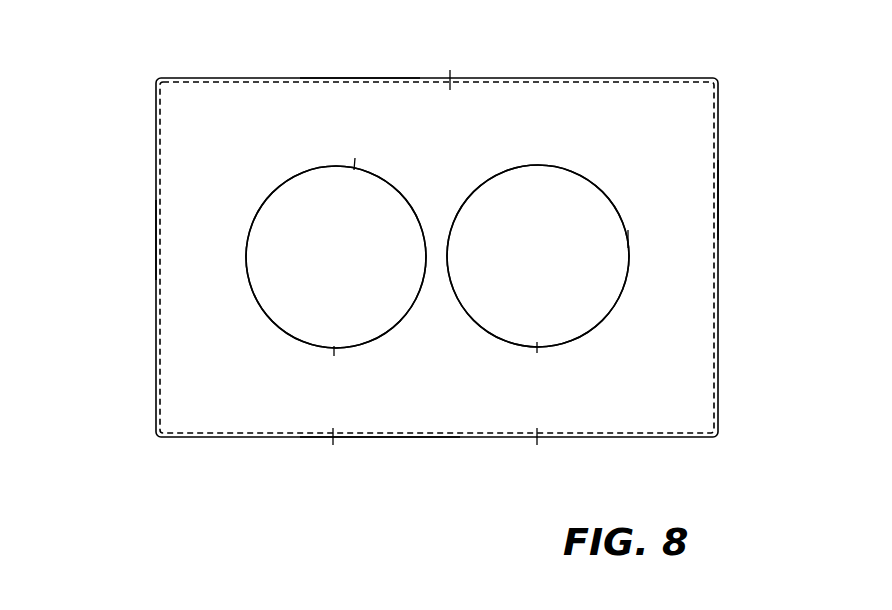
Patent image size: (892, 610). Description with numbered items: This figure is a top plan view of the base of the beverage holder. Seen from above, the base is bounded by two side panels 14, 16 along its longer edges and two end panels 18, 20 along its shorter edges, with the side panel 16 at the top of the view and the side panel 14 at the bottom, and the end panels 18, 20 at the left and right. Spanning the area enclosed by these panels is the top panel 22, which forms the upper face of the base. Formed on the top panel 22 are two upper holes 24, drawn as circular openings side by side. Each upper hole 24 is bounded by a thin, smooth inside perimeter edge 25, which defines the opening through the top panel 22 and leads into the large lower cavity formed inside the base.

The side panel 14 is at (378, 448).
The side panel 16 is at (360, 70).
The end panel 18 is at (145, 240).
The end panel 20 is at (729, 199).
The top panel 22 is at (588, 135).
The upper hole 24 is at (320, 180).
The inside perimeter edge 25 is at (355, 168).